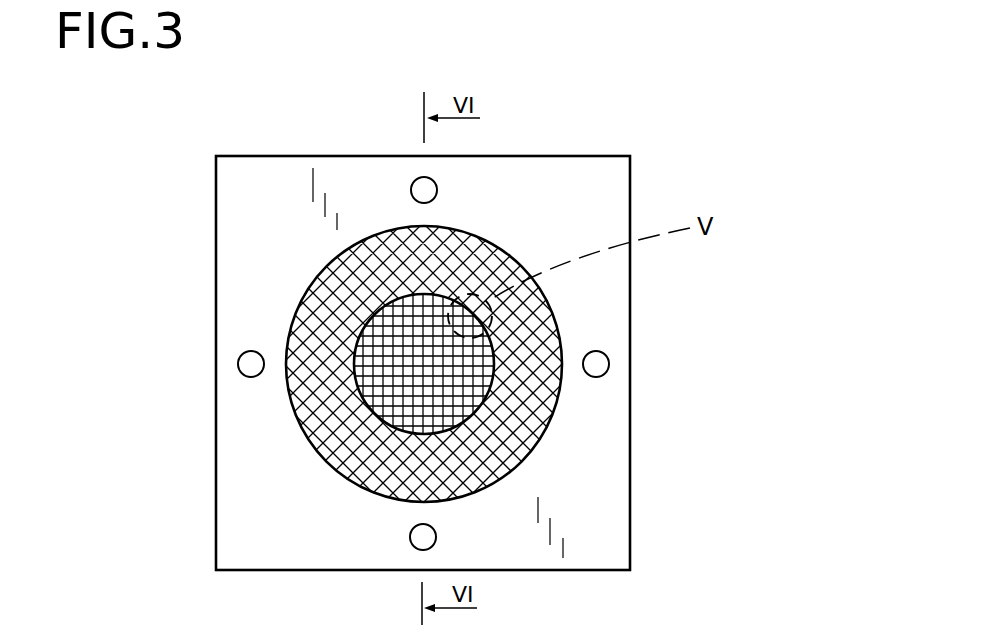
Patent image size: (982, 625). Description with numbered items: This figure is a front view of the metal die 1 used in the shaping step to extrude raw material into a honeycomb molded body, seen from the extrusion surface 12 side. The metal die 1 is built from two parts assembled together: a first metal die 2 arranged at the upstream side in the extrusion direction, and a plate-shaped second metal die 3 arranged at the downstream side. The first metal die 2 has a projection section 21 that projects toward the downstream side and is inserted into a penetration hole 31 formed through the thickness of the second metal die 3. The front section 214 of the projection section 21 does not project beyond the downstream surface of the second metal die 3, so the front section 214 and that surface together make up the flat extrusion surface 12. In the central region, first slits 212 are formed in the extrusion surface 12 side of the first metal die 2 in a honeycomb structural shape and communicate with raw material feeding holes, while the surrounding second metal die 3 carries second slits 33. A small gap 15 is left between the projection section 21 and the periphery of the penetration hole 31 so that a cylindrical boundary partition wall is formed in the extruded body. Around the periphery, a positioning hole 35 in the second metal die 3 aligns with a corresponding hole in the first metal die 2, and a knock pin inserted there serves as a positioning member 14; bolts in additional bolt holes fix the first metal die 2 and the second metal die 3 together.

The metal die 1 is at (600, 137).
The first metal die 2 is at (400, 317).
The second metal die 3 is at (258, 447).
The extrusion surface 12 is at (247, 255).
The positioning member 14 is at (418, 537).
The small gap 15 is at (486, 398).
The projection section 21 is at (390, 403).
The penetration hole 31 is at (325, 257).
The second slits 33 is at (493, 432).
The positioning hole 35 is at (438, 191).
The first slits 212 is at (465, 373).
The front section 214 is at (393, 357).